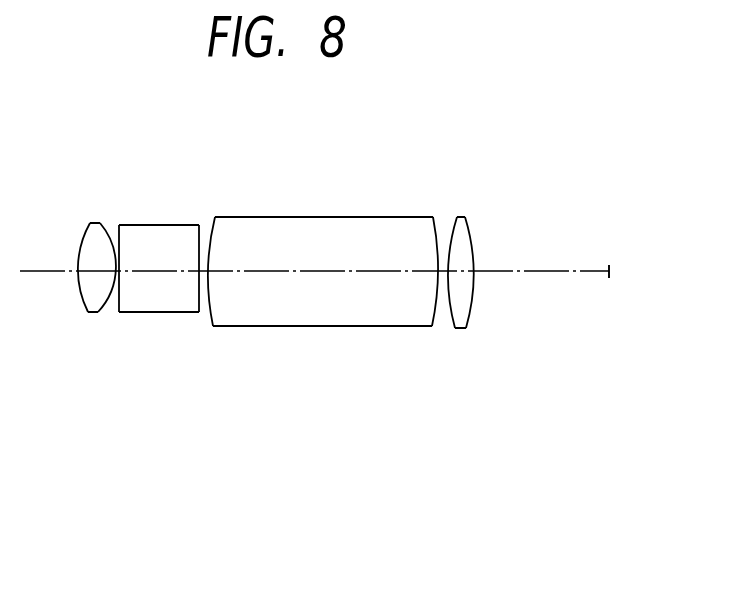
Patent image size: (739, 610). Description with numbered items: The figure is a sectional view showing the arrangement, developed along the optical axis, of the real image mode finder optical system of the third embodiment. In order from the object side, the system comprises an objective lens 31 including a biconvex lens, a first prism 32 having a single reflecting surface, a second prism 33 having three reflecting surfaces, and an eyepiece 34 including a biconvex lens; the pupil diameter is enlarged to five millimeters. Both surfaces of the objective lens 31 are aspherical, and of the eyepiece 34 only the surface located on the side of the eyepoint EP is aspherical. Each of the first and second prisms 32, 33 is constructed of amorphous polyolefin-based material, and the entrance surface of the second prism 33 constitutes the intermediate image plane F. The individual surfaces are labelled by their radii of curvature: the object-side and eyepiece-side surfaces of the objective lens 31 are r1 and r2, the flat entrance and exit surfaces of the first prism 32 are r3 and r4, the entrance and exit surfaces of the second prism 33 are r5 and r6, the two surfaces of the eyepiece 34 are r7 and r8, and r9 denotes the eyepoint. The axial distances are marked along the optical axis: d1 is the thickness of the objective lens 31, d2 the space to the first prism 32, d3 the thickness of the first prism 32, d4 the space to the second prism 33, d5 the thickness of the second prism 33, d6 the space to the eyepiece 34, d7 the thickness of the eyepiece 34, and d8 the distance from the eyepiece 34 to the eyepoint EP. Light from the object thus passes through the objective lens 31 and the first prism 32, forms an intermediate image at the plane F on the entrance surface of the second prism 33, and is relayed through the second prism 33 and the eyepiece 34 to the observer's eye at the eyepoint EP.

The objective lens 31 is at (75, 211).
The first prism 32 is at (162, 211).
The second prism 33 is at (323, 218).
The eyepiece 34 is at (480, 218).
The radius of curvature of first surface r1 is at (80, 253).
The radius of curvature of second surface r2 is at (115, 266).
The radius of curvature of third surface r3 is at (117, 270).
The radius of curvature of fourth surface r4 is at (198, 243).
The radius of curvature of fifth surface r5 is at (215, 230).
The radius of curvature of sixth surface r6 is at (430, 237).
The radius of curvature of seventh surface r7 is at (455, 233).
The radius of curvature of eighth surface r8 is at (473, 255).
The eyepoint surface r9 is at (609, 239).
The thickness of objective lens d1 is at (100, 268).
The space between objective lens and first prism d2 is at (117, 271).
The thickness of first prism d3 is at (158, 271).
The space between first prism and second prism d4 is at (203, 272).
The thickness of second prism d5 is at (325, 272).
The space between second prism and eyepiece d6 is at (442, 272).
The thickness of eyepiece d7 is at (460, 273).
The space between eyepiece and eyepoint d8 is at (543, 273).
The intermediate image plane F is at (212, 302).
The eyepoint EP is at (609, 310).